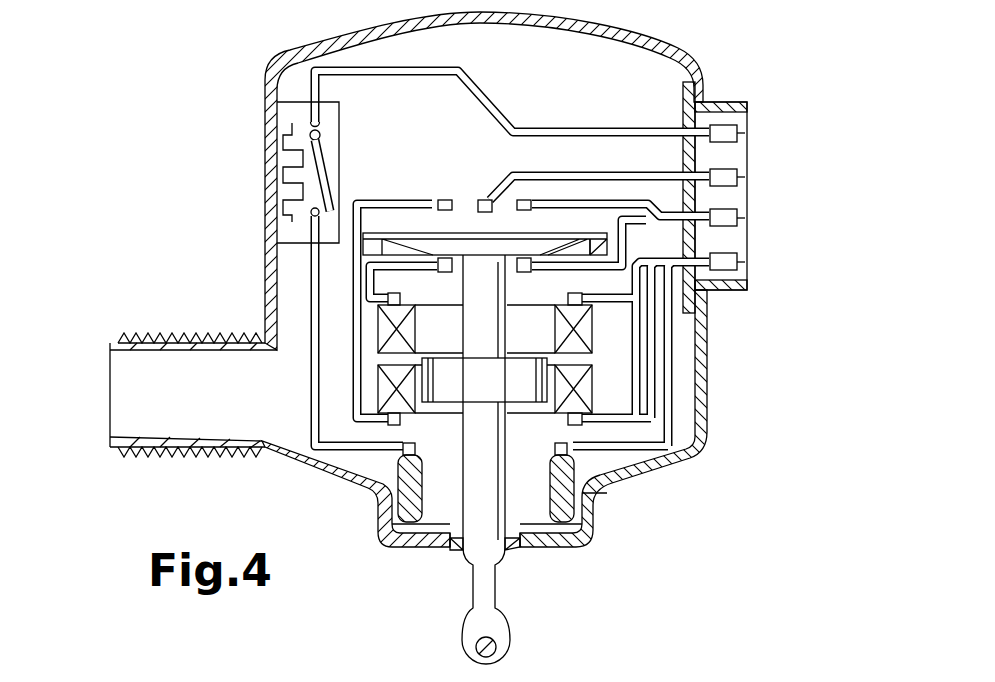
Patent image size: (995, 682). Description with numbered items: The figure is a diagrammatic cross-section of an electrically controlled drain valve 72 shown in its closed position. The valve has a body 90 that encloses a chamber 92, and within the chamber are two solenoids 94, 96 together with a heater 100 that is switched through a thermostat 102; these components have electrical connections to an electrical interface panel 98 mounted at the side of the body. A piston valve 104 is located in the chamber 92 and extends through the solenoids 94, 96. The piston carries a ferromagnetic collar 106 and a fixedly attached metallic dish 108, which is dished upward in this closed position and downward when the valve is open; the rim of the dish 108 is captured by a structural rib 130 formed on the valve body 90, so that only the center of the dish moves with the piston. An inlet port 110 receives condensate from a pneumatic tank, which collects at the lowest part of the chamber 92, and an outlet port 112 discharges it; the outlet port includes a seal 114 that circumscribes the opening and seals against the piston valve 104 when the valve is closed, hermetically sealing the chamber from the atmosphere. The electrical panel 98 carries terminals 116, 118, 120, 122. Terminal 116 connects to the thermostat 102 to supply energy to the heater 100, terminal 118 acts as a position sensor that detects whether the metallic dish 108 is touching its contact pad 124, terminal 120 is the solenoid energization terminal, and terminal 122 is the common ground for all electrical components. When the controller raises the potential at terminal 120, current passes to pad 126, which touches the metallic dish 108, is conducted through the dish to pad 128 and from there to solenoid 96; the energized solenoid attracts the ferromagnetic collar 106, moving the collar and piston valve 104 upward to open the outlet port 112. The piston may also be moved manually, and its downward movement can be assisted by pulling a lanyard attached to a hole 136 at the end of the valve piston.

The drain valve 72 is at (677, 30).
The body 90 is at (708, 378).
The chamber 92 is at (263, 397).
The solenoid 94 is at (595, 398).
The solenoid 96 is at (595, 347).
The electrical interface panel 98 is at (747, 245).
The heater 100 is at (620, 493).
The thermostat 102 is at (343, 135).
The piston valve 104 is at (508, 635).
The ferromagnetic collar 106 is at (510, 393).
The metallic dish 108 is at (397, 223).
The inlet port 110 is at (136, 394).
The outlet port 112 is at (488, 548).
The seal 114 is at (455, 546).
The terminal 116 is at (745, 133).
The terminal 118 is at (745, 177).
The terminal 120 is at (745, 219).
The terminal 122 is at (745, 262).
The contact pad 124 is at (488, 200).
The pad 126 is at (530, 257).
The pad 128 is at (433, 257).
The structural rib 130 is at (603, 233).
The hole 136 is at (478, 650).